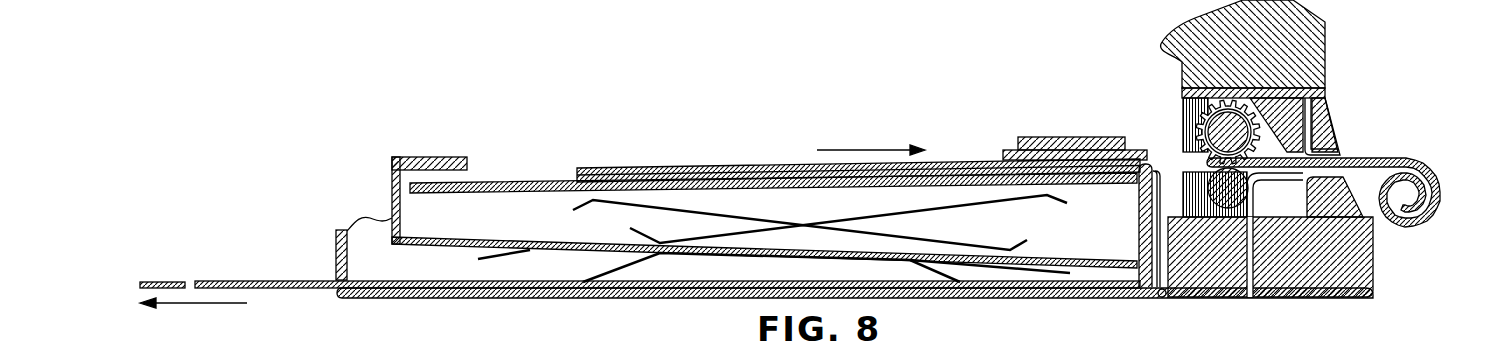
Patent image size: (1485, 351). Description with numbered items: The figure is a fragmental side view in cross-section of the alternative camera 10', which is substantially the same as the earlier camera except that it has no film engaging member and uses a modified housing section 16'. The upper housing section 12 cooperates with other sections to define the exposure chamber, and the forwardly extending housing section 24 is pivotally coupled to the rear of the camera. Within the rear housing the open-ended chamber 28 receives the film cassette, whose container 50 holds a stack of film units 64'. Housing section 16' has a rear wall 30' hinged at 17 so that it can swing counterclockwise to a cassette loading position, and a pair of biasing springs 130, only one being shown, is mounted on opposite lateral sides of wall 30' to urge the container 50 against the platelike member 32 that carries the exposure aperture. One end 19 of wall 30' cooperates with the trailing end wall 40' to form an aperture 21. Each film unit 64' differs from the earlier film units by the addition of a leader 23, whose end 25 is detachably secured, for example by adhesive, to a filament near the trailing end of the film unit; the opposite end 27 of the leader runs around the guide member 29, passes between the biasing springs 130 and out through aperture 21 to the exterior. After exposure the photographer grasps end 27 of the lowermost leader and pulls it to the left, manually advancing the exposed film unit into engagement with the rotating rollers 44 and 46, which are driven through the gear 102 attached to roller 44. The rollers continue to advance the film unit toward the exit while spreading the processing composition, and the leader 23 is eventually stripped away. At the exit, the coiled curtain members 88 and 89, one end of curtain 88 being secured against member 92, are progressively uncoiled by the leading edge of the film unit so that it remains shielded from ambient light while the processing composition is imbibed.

The camera 10' is at (1348, 136).
The housing section 12 is at (1332, 58).
The housing section 16' is at (662, 318).
The hinge 17 is at (1160, 298).
The end of wall 19 is at (337, 294).
The aperture 21 is at (335, 277).
The leader 23 is at (918, 285).
The housing section 24 is at (1380, 260).
The end of leader 25 is at (563, 185).
The end of leader 27 is at (277, 279).
The chamber 28 is at (507, 300).
The guide member 29 is at (1140, 228).
The rear wall 30' is at (571, 319).
The platelike member 32 is at (1070, 137).
The trailing end wall 40' is at (335, 217).
The roller 44 is at (1203, 127).
The roller 46 is at (1215, 133).
The container 50 is at (430, 244).
The film unit 64' is at (858, 141).
The curtain member 88 is at (1370, 158).
The curtain member 89 is at (1345, 200).
The member 92 is at (1337, 131).
The gear 102 is at (1183, 103).
The biasing spring 130 is at (708, 262).